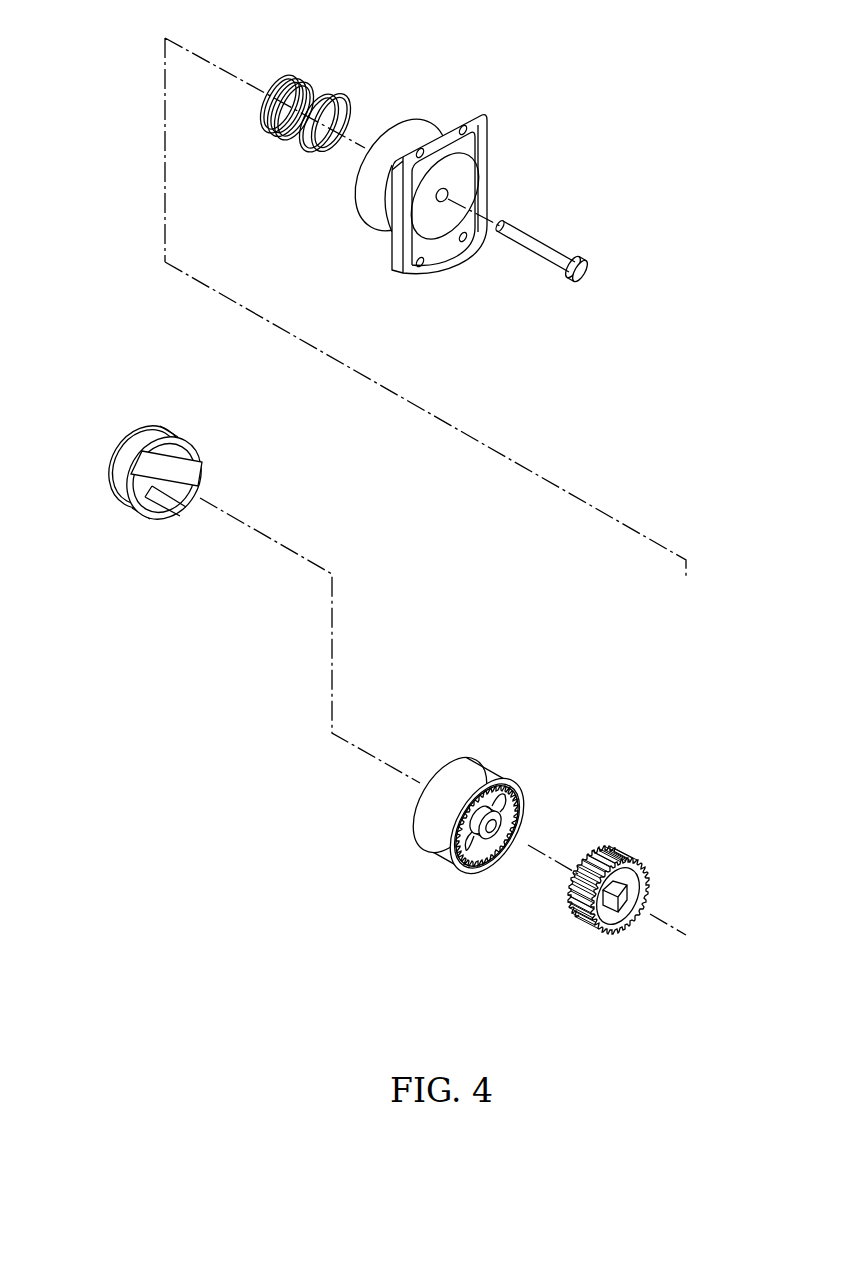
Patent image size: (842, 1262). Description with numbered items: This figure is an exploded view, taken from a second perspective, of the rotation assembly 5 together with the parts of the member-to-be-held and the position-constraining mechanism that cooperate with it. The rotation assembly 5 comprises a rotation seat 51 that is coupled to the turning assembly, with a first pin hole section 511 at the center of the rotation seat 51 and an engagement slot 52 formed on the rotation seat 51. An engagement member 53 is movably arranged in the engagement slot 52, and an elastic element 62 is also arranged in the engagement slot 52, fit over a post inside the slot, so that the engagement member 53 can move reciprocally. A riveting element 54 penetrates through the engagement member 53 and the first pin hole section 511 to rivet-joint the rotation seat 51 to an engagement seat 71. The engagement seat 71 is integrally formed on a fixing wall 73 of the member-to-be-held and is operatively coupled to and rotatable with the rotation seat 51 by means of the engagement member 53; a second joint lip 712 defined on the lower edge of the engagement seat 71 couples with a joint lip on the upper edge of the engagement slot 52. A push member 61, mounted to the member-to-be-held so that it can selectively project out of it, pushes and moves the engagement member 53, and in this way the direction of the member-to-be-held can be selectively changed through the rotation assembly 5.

The rotation assembly 5 is at (672, 113).
The rotation seat 51 is at (490, 195).
The first pin hole section 511 is at (444, 202).
The engagement slot 52 is at (418, 110).
The engagement member 53 is at (632, 860).
The riveting element 54 is at (578, 283).
The push member 61 is at (139, 527).
The elastic element 62 is at (283, 76).
The engagement seat 71 is at (465, 890).
The second joint lip 712 is at (473, 864).
The fixing wall 73 is at (553, 938).